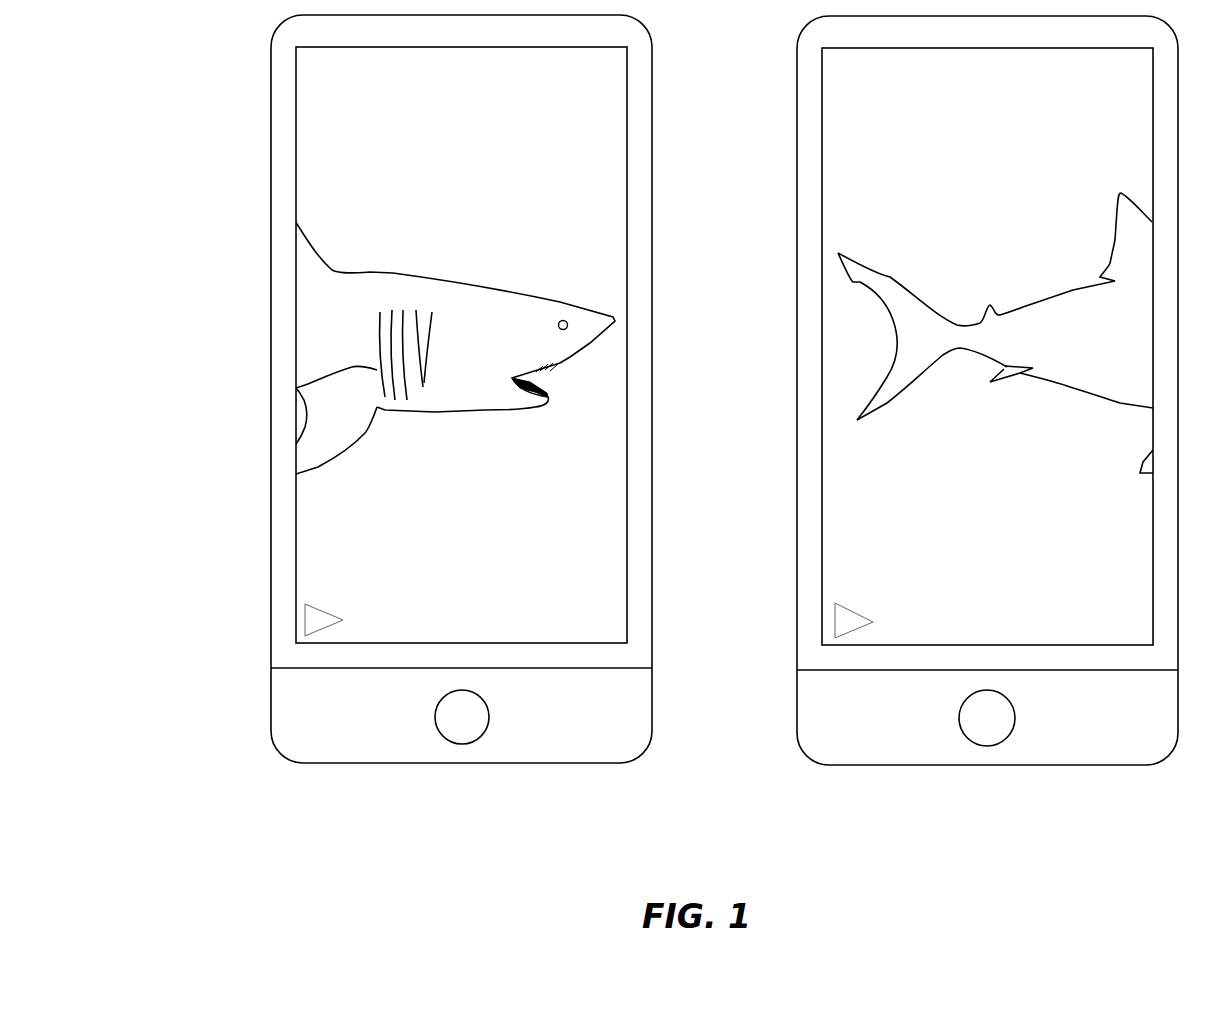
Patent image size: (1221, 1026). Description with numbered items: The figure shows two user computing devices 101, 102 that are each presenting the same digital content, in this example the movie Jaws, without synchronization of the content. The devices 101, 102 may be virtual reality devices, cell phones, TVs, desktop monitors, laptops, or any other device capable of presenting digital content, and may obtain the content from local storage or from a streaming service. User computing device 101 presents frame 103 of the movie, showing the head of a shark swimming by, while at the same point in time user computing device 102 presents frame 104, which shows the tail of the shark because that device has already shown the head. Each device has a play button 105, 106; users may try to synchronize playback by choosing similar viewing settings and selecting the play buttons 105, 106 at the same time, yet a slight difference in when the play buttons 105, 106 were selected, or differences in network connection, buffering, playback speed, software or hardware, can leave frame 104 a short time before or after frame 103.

The user computing device 101 is at (270, 391).
The user computing device 102 is at (797, 447).
The frame 103 is at (470, 474).
The frame 104 is at (1020, 475).
The play button 105 is at (318, 622).
The play button 106 is at (848, 622).